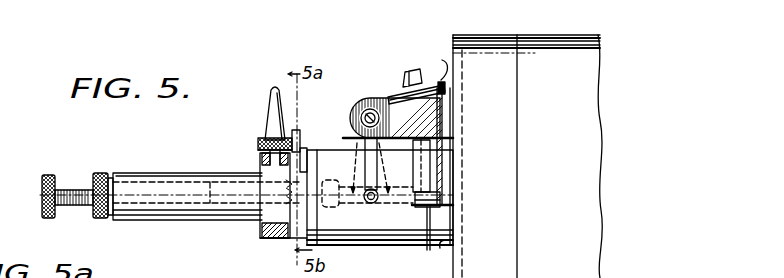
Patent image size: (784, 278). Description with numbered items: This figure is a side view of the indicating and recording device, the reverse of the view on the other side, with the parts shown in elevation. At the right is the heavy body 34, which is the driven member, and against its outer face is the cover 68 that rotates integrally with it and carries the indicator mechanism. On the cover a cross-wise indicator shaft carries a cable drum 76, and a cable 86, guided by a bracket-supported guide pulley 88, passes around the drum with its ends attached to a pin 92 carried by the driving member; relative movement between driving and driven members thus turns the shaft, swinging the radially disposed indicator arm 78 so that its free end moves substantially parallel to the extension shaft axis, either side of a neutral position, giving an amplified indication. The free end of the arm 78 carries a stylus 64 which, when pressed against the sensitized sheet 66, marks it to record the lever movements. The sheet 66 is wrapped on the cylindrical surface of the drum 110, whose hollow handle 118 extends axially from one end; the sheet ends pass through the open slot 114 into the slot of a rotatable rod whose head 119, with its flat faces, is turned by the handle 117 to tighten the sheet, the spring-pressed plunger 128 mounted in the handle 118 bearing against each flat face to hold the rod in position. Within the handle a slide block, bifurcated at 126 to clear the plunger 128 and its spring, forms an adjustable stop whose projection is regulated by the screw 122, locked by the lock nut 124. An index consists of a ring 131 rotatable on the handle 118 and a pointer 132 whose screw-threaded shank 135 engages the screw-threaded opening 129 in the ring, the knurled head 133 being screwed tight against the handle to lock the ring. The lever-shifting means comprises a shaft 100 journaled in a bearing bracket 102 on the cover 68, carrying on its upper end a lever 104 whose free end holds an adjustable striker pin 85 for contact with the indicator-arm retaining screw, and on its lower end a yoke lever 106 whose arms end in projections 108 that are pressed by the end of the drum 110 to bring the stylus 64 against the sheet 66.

The body 34 is at (556, 48).
The stylus 64 is at (371, 204).
The sensitized sheet 66 is at (315, 240).
The cover 68 is at (483, 48).
The cable drum 76 is at (361, 99).
The indicator arm 78 is at (364, 153).
The striker pin 85 is at (352, 111).
The cable 86 is at (391, 101).
The guide pulley 88 is at (403, 84).
The pin 92 is at (443, 62).
The shaft 100 is at (428, 250).
The bearing bracket 102 is at (441, 170).
The lever 104 is at (380, 146).
The yoke lever 106 is at (418, 205).
The projection 108 is at (442, 247).
The drum 110 is at (342, 207).
The slot 114 is at (305, 205).
The handle 117 is at (298, 135).
The hollow handle 118 is at (164, 212).
The head 119 is at (304, 153).
The screw 122 is at (68, 190).
The lock nut 124 is at (99, 174).
The bifurcation 126 is at (288, 191).
The plunger 128 is at (300, 203).
The screw-threaded opening 129 is at (262, 159).
The ring 131 is at (288, 236).
The pointer 132 is at (272, 92).
The knurled head 133 is at (259, 140).
The screw-threaded shank 135 is at (258, 147).